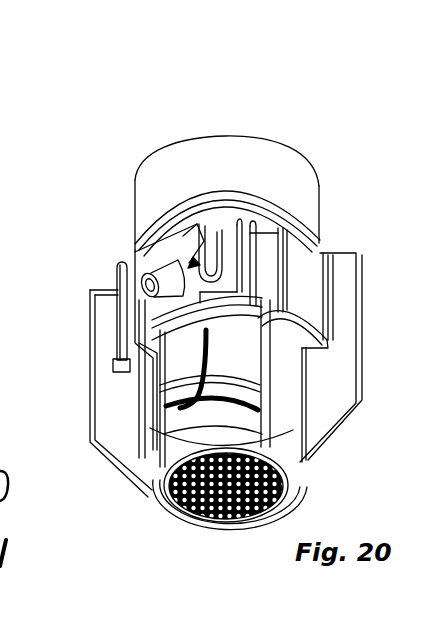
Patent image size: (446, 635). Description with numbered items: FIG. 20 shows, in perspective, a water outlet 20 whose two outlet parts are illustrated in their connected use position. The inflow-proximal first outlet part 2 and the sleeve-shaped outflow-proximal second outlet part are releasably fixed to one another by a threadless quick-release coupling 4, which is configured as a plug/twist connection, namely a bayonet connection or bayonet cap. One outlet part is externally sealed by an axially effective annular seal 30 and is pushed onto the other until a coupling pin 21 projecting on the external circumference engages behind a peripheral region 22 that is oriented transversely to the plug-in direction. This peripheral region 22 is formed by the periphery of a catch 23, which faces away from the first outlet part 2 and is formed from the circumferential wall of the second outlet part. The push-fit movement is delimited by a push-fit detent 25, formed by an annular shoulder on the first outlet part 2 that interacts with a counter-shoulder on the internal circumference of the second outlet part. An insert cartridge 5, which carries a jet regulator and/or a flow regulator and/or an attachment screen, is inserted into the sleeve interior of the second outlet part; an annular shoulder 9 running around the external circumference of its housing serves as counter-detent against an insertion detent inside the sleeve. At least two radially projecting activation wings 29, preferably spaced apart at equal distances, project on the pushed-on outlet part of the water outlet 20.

The water outlet 20 is at (147, 100).
The first outlet part 2 is at (280, 182).
The peripheral region 22 is at (212, 236).
The catch 23 is at (170, 243).
The coupling pin 21 is at (167, 283).
The quick-release coupling 4 is at (105, 276).
The push-fit detent 25 is at (263, 306).
The insert cartridge 5 is at (180, 366).
The annular seal 30 is at (200, 400).
The activation wing 29 is at (112, 440).
The annular shoulder 9 is at (191, 422).